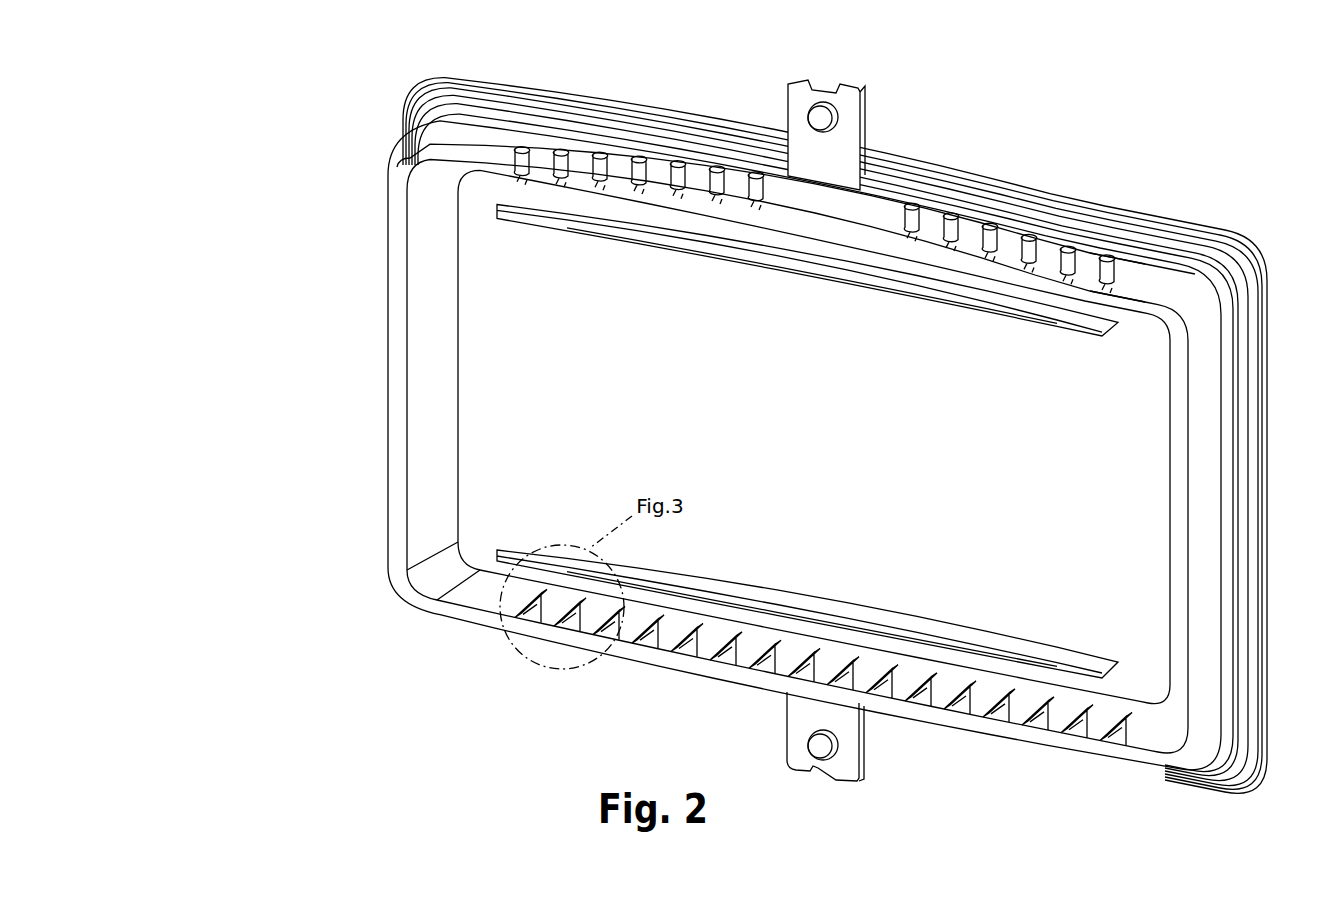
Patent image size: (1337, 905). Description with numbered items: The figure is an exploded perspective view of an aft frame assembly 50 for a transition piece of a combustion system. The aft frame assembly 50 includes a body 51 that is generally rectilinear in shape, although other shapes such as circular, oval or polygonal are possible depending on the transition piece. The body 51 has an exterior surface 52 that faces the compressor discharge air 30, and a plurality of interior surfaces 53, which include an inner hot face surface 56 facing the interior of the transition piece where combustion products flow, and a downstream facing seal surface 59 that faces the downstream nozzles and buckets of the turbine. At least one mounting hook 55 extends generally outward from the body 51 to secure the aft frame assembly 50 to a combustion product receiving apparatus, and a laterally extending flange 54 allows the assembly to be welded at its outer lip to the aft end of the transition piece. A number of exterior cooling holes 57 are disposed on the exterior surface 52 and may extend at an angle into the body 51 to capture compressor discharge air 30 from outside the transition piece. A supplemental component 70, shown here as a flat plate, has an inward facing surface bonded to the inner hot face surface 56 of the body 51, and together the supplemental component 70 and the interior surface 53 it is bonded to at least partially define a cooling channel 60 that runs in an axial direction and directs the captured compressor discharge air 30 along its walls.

The compressor discharge air 30 is at (1102, 243).
The aft frame assembly 50 is at (745, 443).
The body 51 is at (385, 102).
The exterior surface 52 is at (488, 147).
The interior surfaces 53 is at (465, 374).
The laterally extending flange 54 is at (1210, 353).
The mounting hook 55 is at (855, 125).
The inner hot face surface 56 is at (413, 425).
The exterior cooling holes 57 is at (678, 166).
The downstream facing seal surface 59 is at (396, 162).
The cooling channel 60 is at (1038, 262).
The supplemental component 70 is at (852, 296).